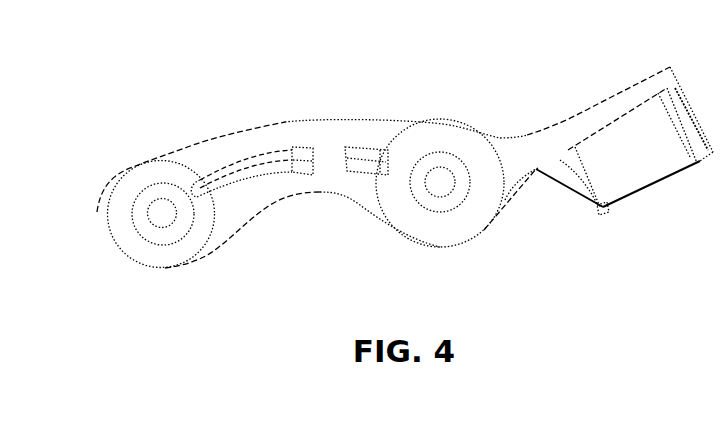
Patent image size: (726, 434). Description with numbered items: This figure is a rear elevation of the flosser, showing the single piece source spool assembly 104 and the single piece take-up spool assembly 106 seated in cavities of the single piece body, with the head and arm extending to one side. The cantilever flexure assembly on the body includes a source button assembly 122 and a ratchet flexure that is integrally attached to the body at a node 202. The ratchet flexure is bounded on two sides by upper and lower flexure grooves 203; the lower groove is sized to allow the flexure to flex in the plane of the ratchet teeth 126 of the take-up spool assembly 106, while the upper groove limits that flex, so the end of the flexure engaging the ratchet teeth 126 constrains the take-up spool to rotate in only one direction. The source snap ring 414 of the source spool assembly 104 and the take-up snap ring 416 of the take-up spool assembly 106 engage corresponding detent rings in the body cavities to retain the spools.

The single piece source spool assembly 104 is at (162, 212).
The single piece take-up spool assembly 106 is at (440, 180).
The source button assembly 122 is at (258, 165).
The ratchet teeth 126 is at (443, 123).
The node 202 is at (327, 160).
The flexure grooves 203 is at (300, 150).
The source snap ring 414 is at (150, 243).
The take-up snap ring 416 is at (432, 210).